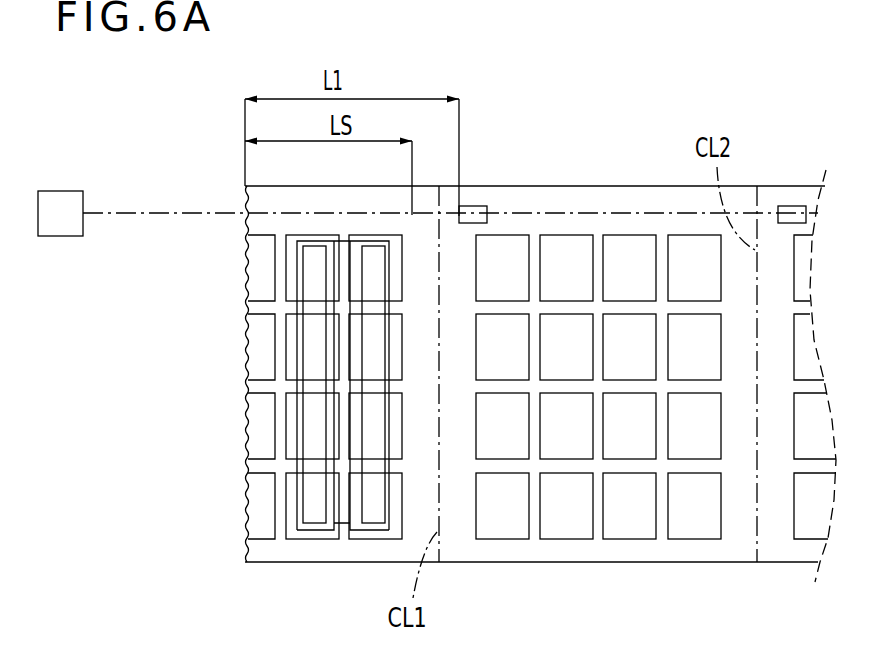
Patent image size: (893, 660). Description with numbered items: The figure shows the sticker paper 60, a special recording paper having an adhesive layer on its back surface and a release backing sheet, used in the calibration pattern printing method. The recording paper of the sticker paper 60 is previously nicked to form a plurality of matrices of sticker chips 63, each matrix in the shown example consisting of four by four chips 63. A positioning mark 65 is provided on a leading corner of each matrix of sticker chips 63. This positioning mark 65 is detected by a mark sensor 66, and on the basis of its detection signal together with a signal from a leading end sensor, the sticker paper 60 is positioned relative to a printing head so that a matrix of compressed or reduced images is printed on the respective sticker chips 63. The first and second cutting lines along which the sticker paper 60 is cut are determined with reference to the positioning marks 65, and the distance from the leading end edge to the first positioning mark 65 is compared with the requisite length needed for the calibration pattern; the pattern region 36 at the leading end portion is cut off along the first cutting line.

The electrode pattern 36 is at (308, 532).
The sticker paper 60 is at (470, 570).
The sticker chips 63 is at (630, 235).
The positioning mark 65 is at (480, 206).
The mark sensor 66 is at (60, 236).